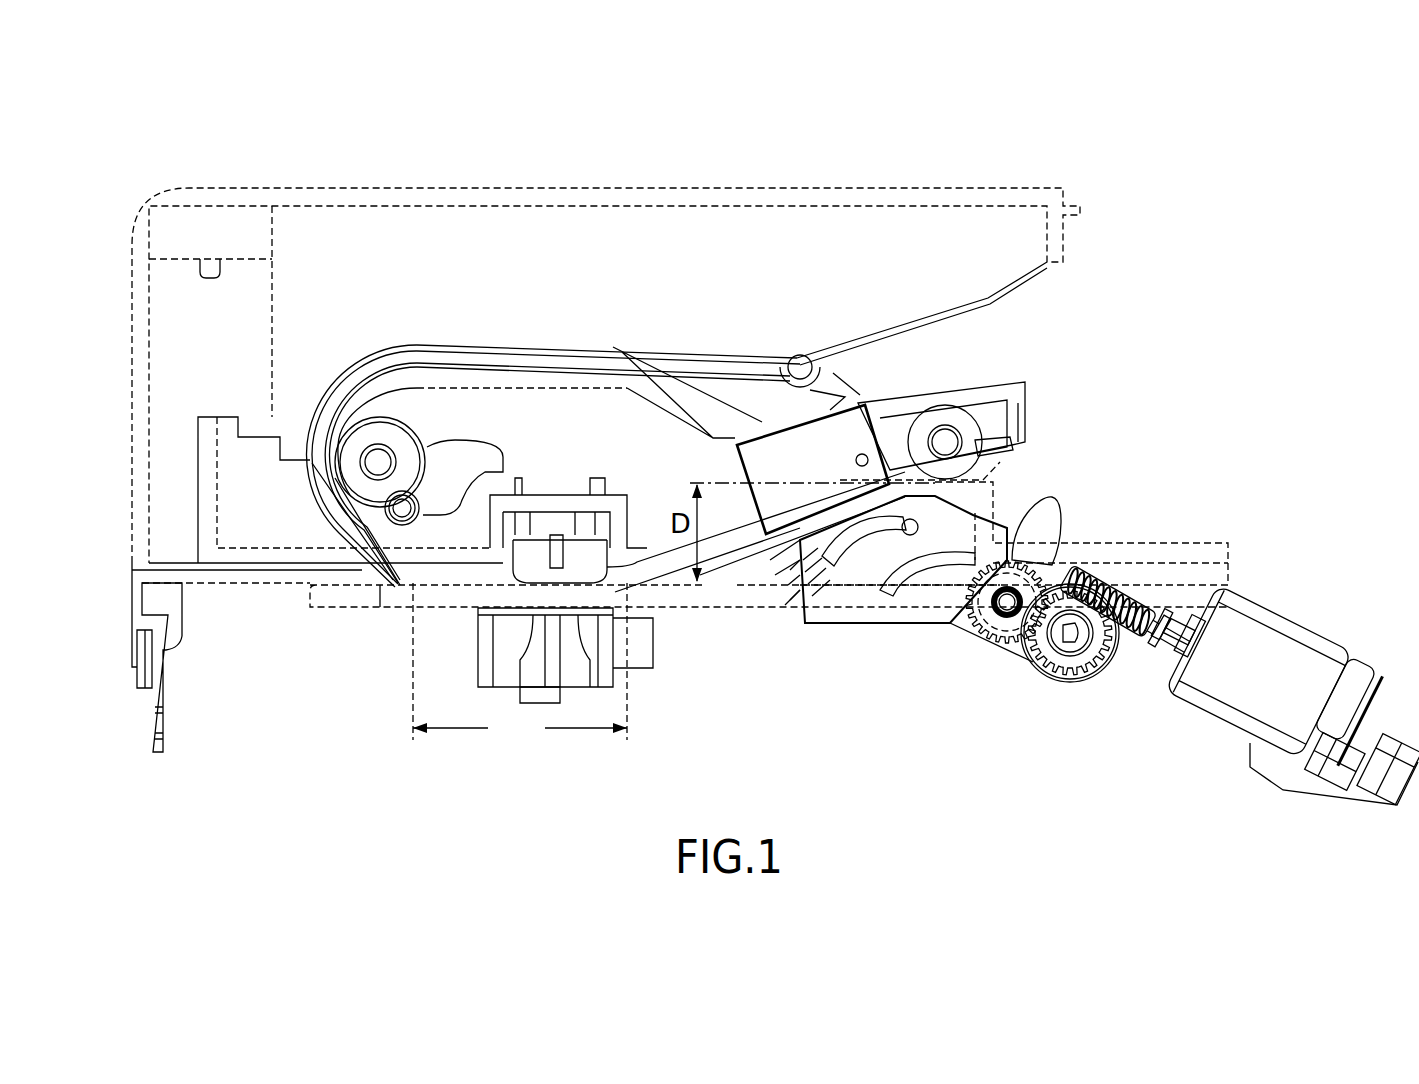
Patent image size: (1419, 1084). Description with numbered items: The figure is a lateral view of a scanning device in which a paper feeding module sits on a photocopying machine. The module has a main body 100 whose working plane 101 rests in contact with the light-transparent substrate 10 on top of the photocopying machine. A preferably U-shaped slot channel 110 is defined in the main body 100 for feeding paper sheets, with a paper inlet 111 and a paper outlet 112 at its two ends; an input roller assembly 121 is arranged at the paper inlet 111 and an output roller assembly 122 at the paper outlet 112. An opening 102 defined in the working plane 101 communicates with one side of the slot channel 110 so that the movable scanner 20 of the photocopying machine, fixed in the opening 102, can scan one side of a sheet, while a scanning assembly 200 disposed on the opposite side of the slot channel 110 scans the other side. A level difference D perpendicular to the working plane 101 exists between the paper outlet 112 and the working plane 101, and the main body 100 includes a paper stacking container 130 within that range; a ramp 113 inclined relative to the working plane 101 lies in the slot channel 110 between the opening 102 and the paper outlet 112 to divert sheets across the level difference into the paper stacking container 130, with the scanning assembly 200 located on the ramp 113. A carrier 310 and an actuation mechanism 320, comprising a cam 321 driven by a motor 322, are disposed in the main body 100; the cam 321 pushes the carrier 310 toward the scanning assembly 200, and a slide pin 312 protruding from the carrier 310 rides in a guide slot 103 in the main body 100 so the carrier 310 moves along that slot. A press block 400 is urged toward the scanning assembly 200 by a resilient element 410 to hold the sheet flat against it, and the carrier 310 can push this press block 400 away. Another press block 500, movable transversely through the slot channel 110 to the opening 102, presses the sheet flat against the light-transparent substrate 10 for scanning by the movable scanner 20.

The main body 100 is at (1112, 281).
The light-transparent substrate 10 is at (337, 595).
The working plane 101 is at (386, 588).
The opening 102 is at (520, 664).
The movable scanner 20 is at (593, 643).
The slot channel 110 is at (483, 352).
The paper inlet 111 is at (940, 323).
The paper outlet 112 is at (1027, 450).
The ramp 113 is at (712, 560).
The input roller assembly 121 is at (860, 388).
The output roller assembly 122 is at (980, 467).
The paper stacking container 130 is at (1230, 551).
The scanning assembly 200 is at (763, 458).
The carrier 310 is at (923, 565).
The slide pin 312 is at (933, 523).
The guide slot 103 is at (877, 537).
The actuation mechanism 320 is at (1113, 548).
The cam 321 is at (1048, 520).
The motor 322 is at (1223, 630).
The press block 400 is at (837, 563).
The resilient element 410 is at (805, 600).
The press block 500 is at (533, 553).